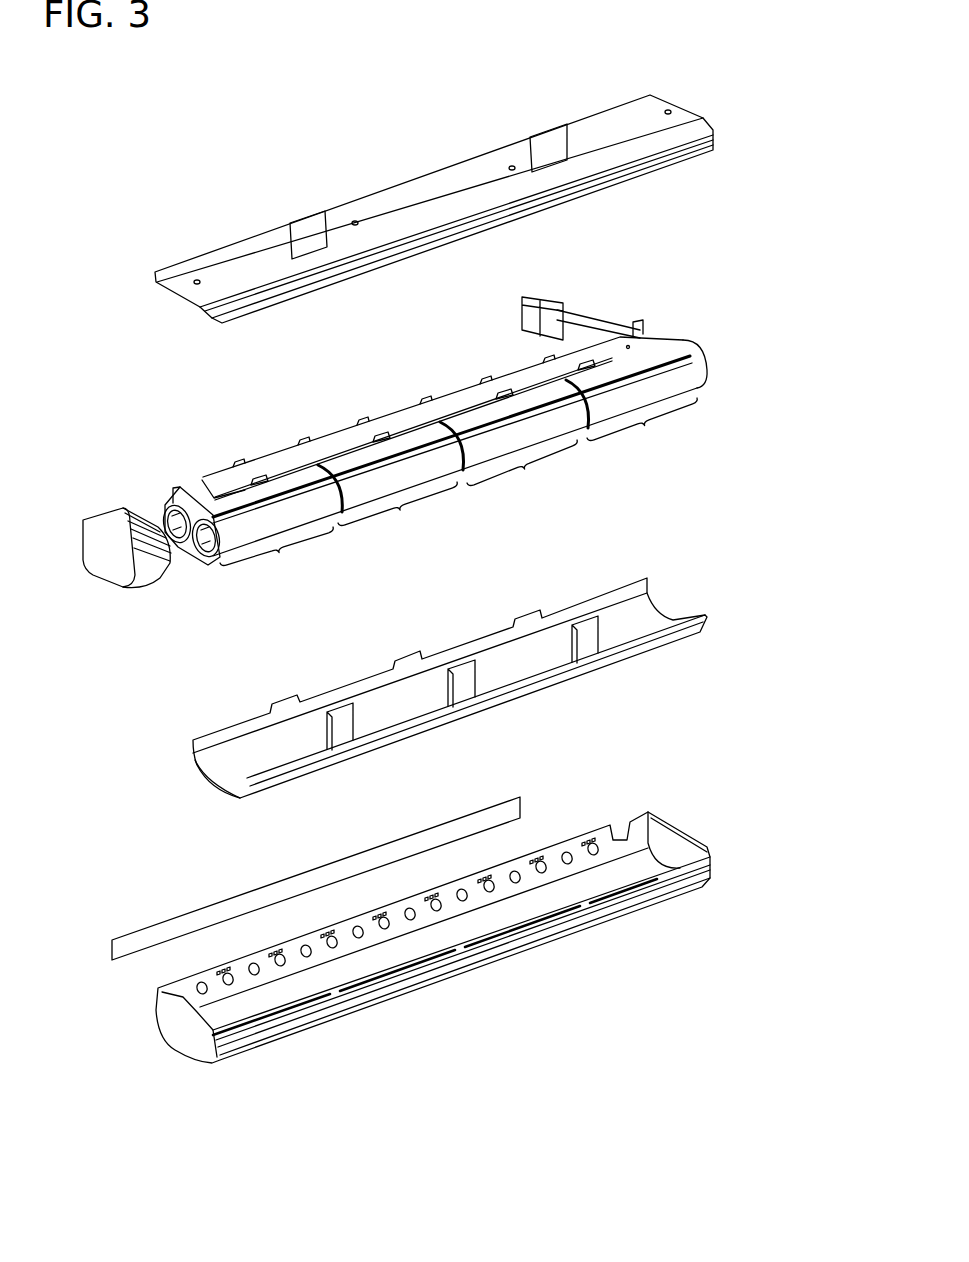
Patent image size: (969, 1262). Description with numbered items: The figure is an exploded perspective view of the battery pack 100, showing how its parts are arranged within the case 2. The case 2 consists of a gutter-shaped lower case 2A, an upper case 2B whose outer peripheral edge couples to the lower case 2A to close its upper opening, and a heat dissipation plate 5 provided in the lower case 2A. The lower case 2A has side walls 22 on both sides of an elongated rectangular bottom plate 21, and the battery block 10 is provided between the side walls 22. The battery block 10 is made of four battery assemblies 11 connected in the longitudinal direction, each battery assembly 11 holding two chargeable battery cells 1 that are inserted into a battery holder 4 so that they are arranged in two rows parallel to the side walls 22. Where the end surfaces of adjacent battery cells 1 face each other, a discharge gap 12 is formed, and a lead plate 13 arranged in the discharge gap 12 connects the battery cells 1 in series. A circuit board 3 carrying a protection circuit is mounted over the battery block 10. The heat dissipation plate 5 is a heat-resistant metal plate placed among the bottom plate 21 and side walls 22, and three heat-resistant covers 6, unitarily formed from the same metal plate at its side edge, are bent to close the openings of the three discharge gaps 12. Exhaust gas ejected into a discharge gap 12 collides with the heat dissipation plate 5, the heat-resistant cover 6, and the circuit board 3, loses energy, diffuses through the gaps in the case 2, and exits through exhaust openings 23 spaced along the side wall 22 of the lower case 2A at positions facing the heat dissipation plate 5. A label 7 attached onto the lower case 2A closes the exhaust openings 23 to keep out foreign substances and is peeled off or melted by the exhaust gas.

The battery pack 100 is at (235, 150).
The case 2 is at (768, 270).
The lower case 2A is at (463, 919).
The upper case 2B is at (665, 193).
The battery cell 1 is at (290, 517).
The circuit board 3 is at (388, 423).
The battery holder 4 is at (192, 497).
The heat dissipation plate 5 is at (471, 648).
The heat-resistant cover 6 is at (287, 697).
The label 7 is at (233, 903).
The battery block 10 is at (434, 448).
The battery assembly 11 is at (458, 495).
The discharge gap 12 is at (323, 463).
The lead plate 13 is at (190, 550).
The bottom plate 21 is at (268, 1047).
The side wall 22 is at (397, 912).
The exhaust opening 23 is at (285, 965).